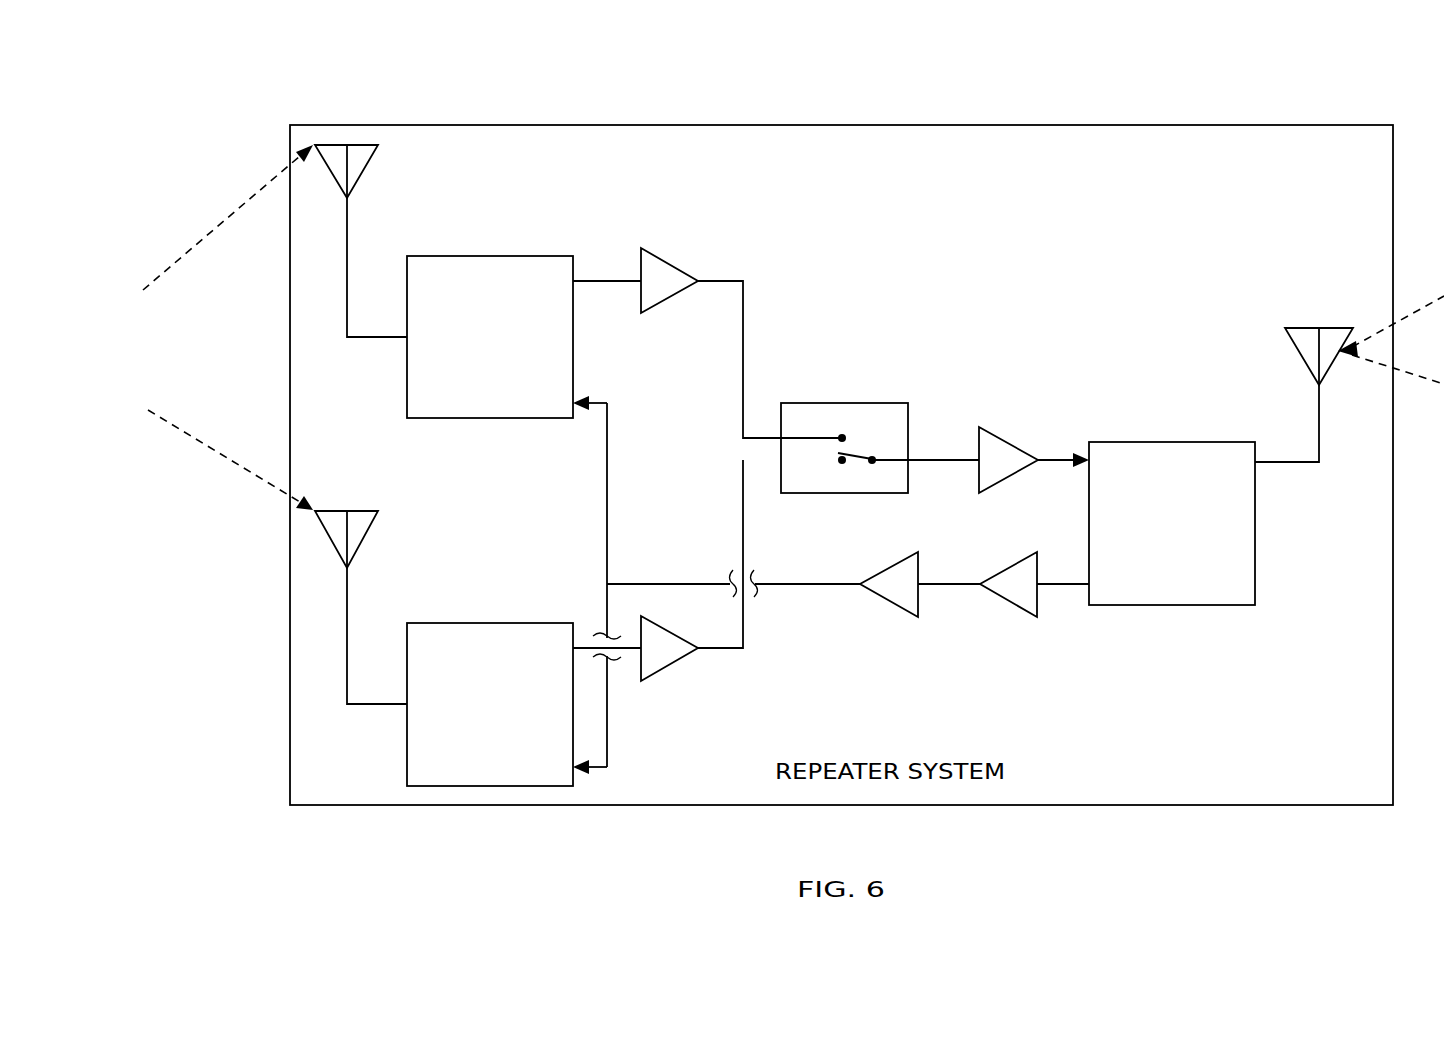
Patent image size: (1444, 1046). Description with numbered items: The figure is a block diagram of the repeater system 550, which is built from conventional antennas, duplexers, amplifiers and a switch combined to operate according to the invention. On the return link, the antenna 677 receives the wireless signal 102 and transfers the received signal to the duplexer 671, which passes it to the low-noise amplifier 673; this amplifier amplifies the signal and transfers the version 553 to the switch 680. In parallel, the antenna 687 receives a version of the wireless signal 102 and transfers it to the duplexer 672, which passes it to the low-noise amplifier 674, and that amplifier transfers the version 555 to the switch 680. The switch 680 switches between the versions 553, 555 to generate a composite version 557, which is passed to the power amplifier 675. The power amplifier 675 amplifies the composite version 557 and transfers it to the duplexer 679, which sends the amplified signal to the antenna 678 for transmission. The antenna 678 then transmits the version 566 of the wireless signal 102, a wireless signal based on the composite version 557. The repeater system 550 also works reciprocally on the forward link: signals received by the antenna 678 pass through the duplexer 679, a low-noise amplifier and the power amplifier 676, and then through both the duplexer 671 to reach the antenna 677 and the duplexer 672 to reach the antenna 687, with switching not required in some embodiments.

The repeater system 550 is at (1130, 125).
The wireless signal 102 is at (197, 243).
The version of the wireless signal 566 is at (1418, 302).
The antenna 677 is at (370, 150).
The antenna 687 is at (370, 516).
The antenna 678 is at (1290, 340).
The duplexer 671 is at (510, 256).
The duplexer 672 is at (510, 623).
The duplexer 679 is at (1193, 442).
The low-noise amplifier 673 is at (668, 298).
The low-noise amplifier 674 is at (668, 665).
The power amplifier 675 is at (1005, 478).
The power amplifier 676 is at (887, 598).
The switch 680 is at (838, 403).
The version of the wireless signal 553 is at (728, 281).
The version of the wireless signal 555 is at (745, 648).
The composite version 557 is at (944, 465).